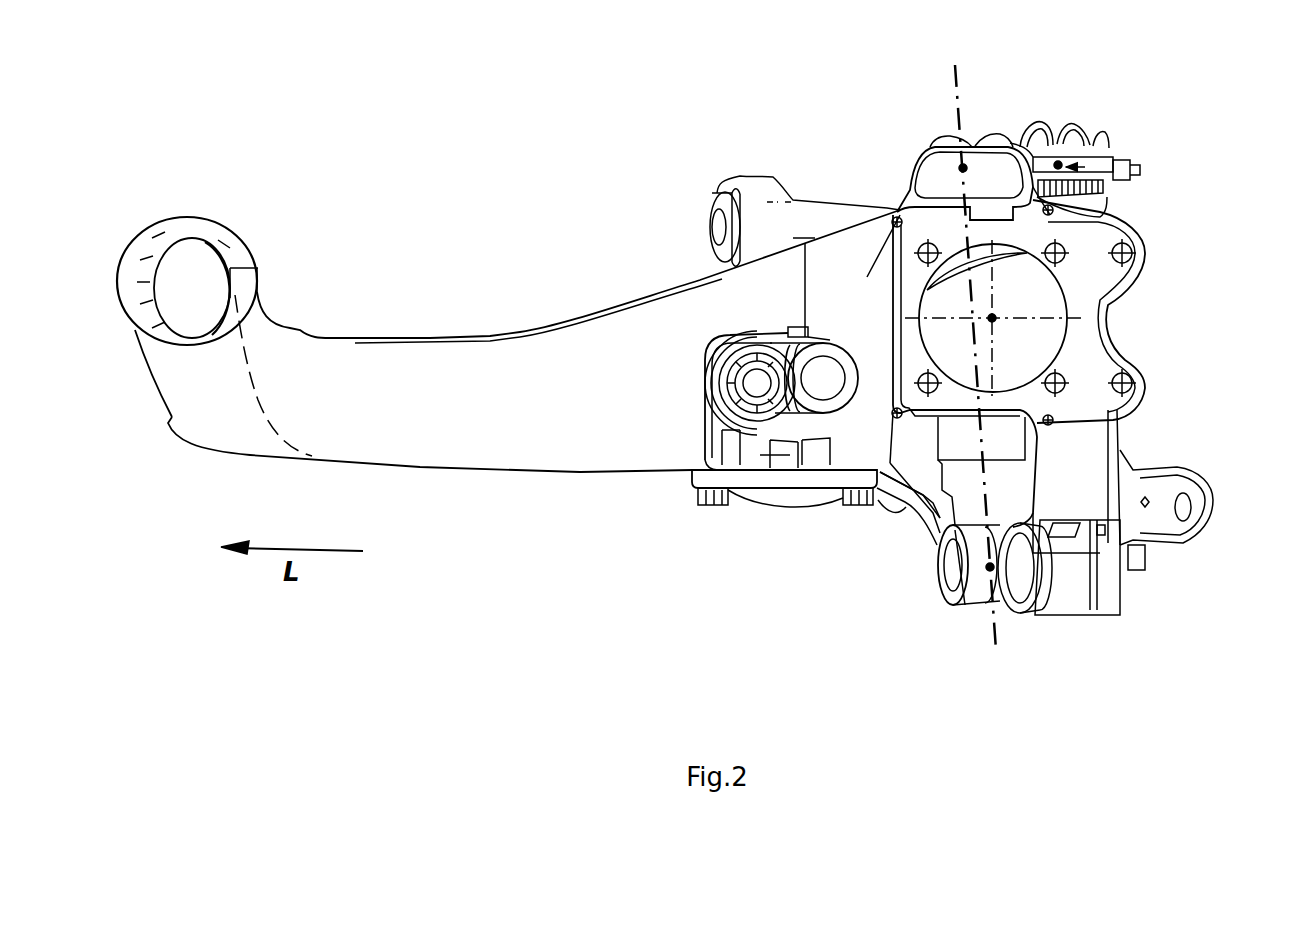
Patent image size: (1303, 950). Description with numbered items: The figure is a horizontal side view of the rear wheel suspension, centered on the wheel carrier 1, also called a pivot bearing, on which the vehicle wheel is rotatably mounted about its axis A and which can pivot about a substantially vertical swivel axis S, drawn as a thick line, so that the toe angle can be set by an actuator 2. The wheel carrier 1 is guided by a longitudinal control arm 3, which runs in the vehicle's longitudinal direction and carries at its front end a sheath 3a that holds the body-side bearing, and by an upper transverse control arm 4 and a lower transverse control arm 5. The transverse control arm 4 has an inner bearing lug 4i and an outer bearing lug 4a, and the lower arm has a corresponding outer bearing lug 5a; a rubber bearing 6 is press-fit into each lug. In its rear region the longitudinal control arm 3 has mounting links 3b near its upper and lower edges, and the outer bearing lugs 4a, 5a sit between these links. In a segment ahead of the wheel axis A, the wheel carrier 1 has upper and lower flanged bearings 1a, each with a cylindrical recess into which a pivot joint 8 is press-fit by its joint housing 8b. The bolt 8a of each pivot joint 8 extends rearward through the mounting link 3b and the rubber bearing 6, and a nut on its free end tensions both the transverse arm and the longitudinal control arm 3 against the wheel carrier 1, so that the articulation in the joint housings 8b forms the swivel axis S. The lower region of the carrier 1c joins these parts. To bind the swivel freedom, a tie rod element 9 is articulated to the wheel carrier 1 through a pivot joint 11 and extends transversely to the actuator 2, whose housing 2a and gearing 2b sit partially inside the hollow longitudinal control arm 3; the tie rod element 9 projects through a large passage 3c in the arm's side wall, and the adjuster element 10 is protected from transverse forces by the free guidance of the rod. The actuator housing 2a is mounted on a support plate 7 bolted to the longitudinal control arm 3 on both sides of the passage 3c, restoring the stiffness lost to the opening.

The wheel carrier 1 is at (919, 218).
The flanged bearing 1a is at (963, 610).
The lower arm portion of wheel carrier 1c is at (869, 408).
The actuator 2 is at (695, 394).
The actuator housing 2a is at (695, 394).
The gearing 2b is at (770, 415).
The longitudinal control arm 3 is at (503, 351).
The sheath 3a is at (206, 213).
The mounting link 3b is at (1013, 133).
The passage 3c is at (721, 334).
The upper transverse control arm 4 is at (816, 192).
The outer bearing lug 4a is at (1018, 142).
The inner bearing lug 4i is at (712, 190).
The lower transverse control arm 5 is at (905, 512).
The outer bearing lug 5a is at (1067, 530).
The rubber bearing 6 is at (720, 249).
The support plate 7 is at (742, 480).
The pivot joint 8 is at (907, 565).
The bolt 8a is at (1143, 171).
The joint housing 8b is at (946, 567).
The tie rod element 9 is at (757, 385).
The adjuster element 10 is at (776, 449).
The pivot joint 11 is at (822, 378).
The swivel axis S is at (968, 122).
The wheel axis A is at (995, 318).